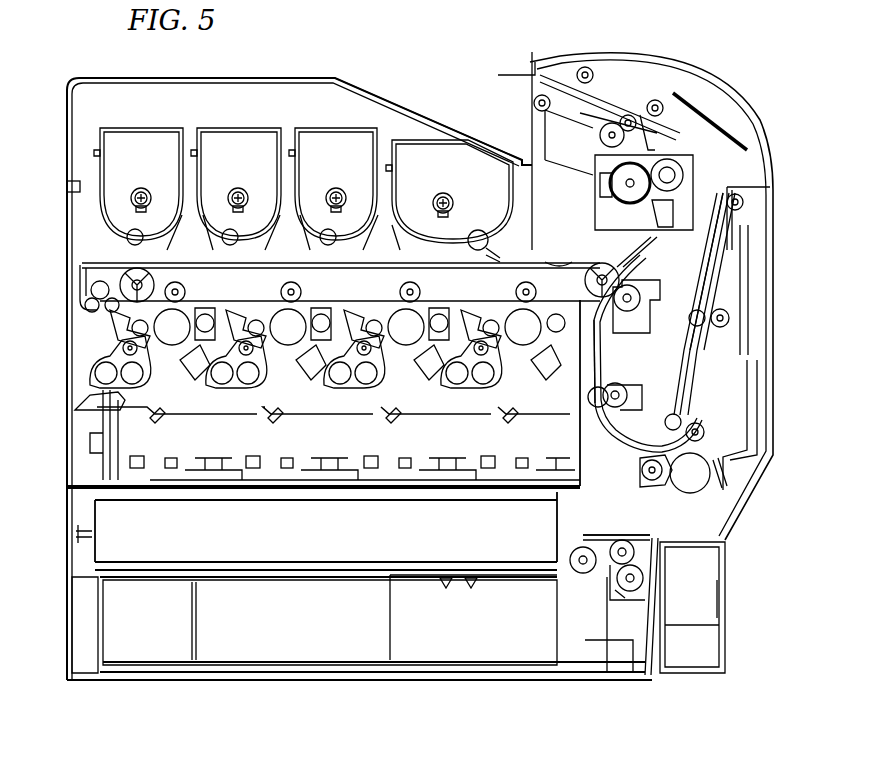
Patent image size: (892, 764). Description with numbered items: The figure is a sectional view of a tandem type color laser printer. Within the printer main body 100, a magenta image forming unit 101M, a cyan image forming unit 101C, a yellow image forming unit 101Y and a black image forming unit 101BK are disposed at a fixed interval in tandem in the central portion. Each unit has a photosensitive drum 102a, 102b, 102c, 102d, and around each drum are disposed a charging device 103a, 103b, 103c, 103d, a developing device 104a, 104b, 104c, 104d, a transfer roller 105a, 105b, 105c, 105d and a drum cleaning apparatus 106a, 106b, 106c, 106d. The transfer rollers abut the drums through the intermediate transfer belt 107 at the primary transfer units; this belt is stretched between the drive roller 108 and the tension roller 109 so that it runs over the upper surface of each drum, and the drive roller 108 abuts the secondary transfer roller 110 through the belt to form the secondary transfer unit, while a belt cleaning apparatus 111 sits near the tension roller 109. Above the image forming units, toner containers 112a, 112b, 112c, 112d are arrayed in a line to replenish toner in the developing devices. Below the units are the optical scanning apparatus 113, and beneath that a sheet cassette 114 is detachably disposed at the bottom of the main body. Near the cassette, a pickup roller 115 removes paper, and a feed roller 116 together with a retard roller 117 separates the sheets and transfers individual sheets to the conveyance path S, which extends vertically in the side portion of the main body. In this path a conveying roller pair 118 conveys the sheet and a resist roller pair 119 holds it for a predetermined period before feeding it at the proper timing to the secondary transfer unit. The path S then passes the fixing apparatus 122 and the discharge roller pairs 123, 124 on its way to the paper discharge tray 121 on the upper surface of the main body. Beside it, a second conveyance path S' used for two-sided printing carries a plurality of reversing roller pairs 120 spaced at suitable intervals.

The printer main body 100 is at (67, 222).
The magenta image forming unit 101M is at (170, 405).
The cyan image forming unit 101C is at (288, 405).
The yellow image forming unit 101Y is at (410, 405).
The black image forming unit 101BK is at (520, 405).
The photosensitive drum 102a is at (195, 289).
The photosensitive drum 102b is at (350, 262).
The photosensitive drum 102c is at (430, 285).
The photosensitive drum 102d is at (530, 300).
The charging device 103a is at (180, 385).
The charging device 103b is at (260, 420).
The charging device 103c is at (420, 385).
The charging device 103d is at (550, 370).
The developing device 104a is at (110, 352).
The developing device 104b is at (250, 400).
The developing device 104c is at (370, 400).
The developing device 104d is at (490, 400).
The transfer roller 105a is at (213, 230).
The transfer roller 105b is at (298, 250).
The transfer roller 105c is at (404, 290).
The transfer roller 105d is at (495, 246).
The drum cleaning apparatus 106a is at (212, 308).
The drum cleaning apparatus 106b is at (330, 300).
The drum cleaning apparatus 106c is at (445, 308).
The drum cleaning apparatus 106d is at (550, 262).
The intermediate transfer belt 107 is at (500, 255).
The drive roller 108 is at (610, 268).
The tension roller 109 is at (112, 262).
The secondary transfer roller 110 is at (635, 318).
The belt cleaning apparatus 111 is at (80, 295).
The toner container 112a is at (158, 128).
The toner container 112b is at (263, 128).
The toner container 112c is at (332, 128).
The toner container 112d is at (446, 140).
The optical scanning apparatus 113 is at (270, 505).
The sheet cassette 114 is at (458, 645).
The pickup roller 115 is at (583, 575).
The feed roller 116 is at (612, 535).
The retard roller 117 is at (645, 580).
The conveying roller pair 118 is at (640, 475).
The resist roller pair 119 is at (635, 380).
The reversing roller pair 120 is at (586, 68).
The paper discharge tray 121 is at (430, 100).
The fixing apparatus 122 is at (643, 205).
The discharge roller pair 123 is at (630, 108).
The discharge roller pair 124 is at (534, 105).
The conveyance path S is at (617, 361).
The conveyance path S' is at (744, 271).